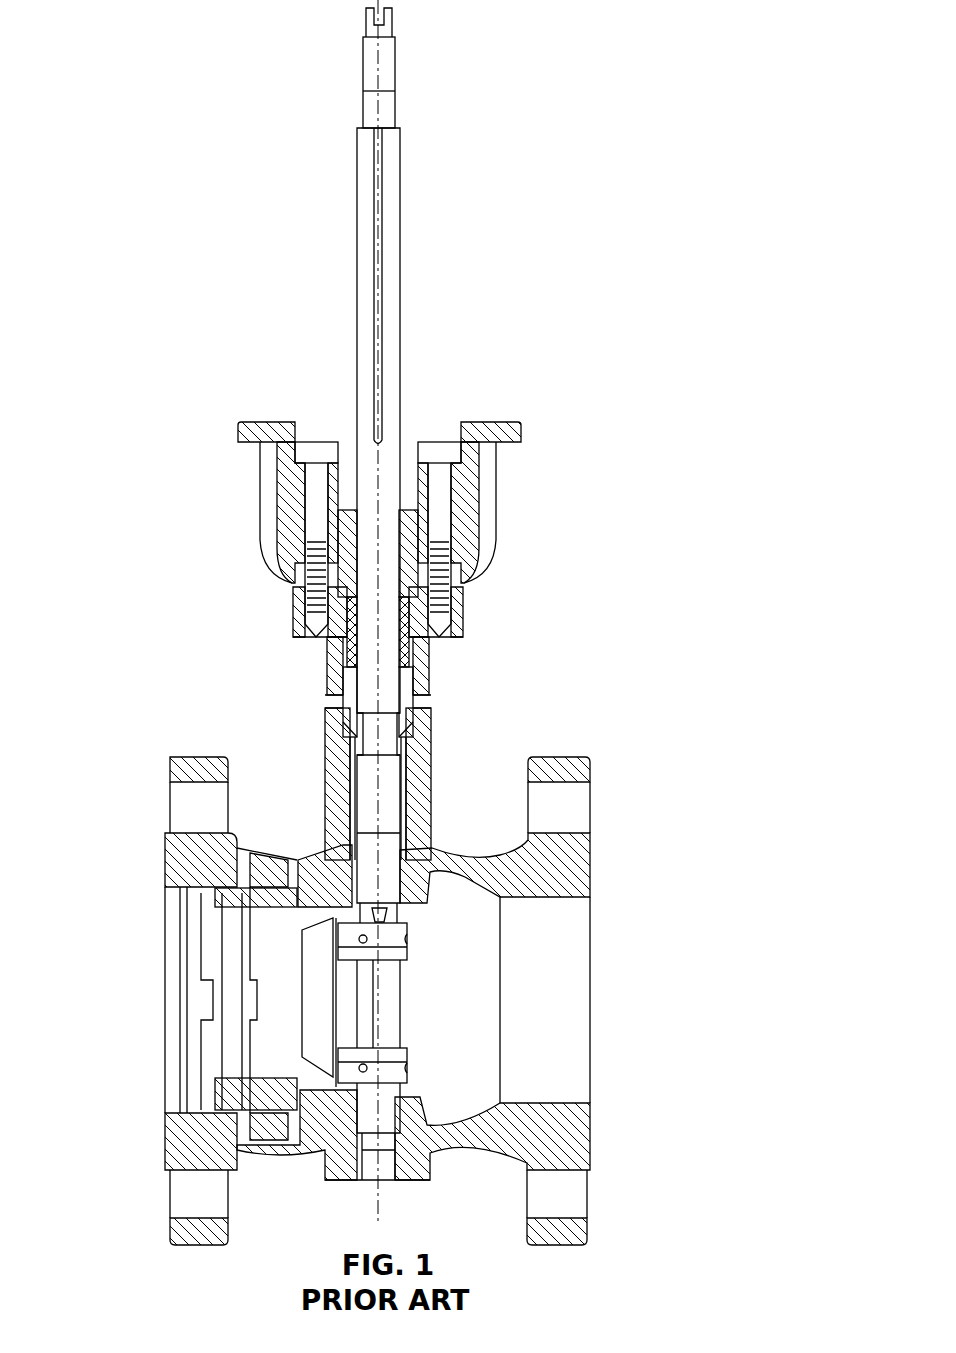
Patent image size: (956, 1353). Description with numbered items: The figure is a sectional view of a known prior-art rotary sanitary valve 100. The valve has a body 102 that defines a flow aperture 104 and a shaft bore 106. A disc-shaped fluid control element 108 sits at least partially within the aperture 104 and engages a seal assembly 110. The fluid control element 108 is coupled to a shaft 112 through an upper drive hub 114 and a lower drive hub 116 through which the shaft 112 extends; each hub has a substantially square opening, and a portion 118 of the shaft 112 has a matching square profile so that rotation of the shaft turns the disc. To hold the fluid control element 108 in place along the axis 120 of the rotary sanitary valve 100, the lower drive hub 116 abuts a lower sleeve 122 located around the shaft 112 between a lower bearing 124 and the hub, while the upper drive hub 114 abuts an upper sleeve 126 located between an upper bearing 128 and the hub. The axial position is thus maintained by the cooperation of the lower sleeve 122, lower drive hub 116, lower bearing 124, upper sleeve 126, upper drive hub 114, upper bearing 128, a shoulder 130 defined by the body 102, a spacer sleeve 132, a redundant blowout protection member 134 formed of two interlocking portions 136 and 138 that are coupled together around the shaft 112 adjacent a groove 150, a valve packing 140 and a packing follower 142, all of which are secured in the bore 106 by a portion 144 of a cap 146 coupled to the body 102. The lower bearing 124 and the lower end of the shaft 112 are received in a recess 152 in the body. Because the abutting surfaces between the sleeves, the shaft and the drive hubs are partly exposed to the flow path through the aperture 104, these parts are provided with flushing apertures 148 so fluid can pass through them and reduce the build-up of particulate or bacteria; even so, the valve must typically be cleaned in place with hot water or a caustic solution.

The rotary sanitary valve 100 is at (148, 240).
The body 102 is at (568, 870).
The aperture 104 is at (572, 1100).
The bore 106 is at (410, 625).
The fluid control element 108 is at (318, 978).
The seal assembly 110 is at (197, 1098).
The shaft 112 is at (360, 270).
The upper drive hub 114 is at (397, 957).
The lower drive hub 116 is at (393, 1056).
The portion of the shaft 118 is at (398, 992).
The axis 120 is at (377, 448).
The lower sleeve 122 is at (355, 1078).
The lower bearing 124 is at (398, 1115).
The upper sleeve 126 is at (462, 877).
The upper bearing 128 is at (410, 833).
The shoulder 130 is at (347, 858).
The spacer sleeve 132 is at (410, 772).
The redundant blowout protection member 134 is at (340, 710).
The interlocking portion 136 is at (415, 685).
The interlocking portion 138 is at (343, 670).
The valve packing 140 is at (300, 610).
The packing follower 142 is at (315, 558).
The portion of the cap 144 is at (340, 505).
The cap 146 is at (265, 455).
The apertures 148 is at (358, 936).
The groove 150 is at (405, 730).
The recess 152 is at (357, 1145).